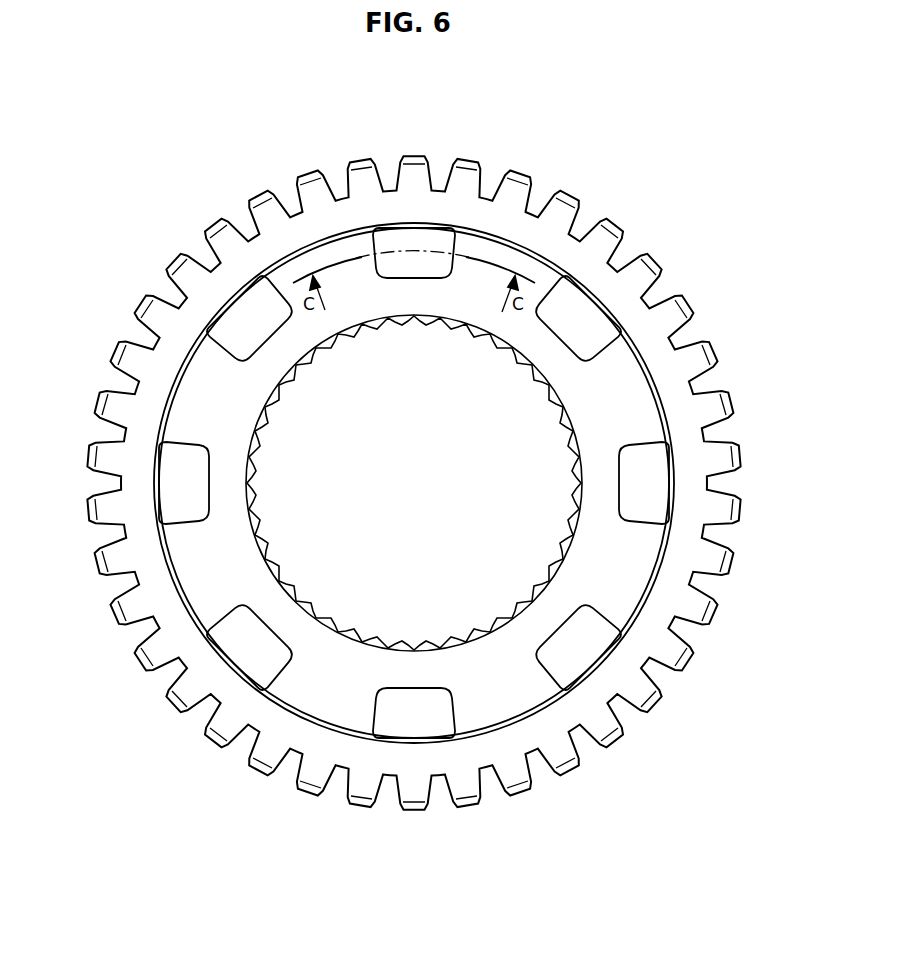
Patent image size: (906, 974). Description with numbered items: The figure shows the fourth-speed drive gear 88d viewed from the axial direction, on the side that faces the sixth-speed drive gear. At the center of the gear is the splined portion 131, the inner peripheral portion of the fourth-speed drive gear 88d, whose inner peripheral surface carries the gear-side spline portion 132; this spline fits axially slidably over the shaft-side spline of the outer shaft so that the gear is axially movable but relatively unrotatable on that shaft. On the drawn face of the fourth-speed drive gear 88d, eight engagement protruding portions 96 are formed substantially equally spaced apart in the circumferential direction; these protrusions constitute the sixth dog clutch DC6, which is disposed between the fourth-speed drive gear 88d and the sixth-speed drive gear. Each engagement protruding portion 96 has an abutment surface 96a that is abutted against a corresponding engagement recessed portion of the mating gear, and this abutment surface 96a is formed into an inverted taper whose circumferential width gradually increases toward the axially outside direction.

The fourth-speed drive gear 88d is at (522, 172).
The sixth dog clutch DC6 is at (442, 224).
The engagement protruding portion 96 is at (414, 240).
The abutment surface 96a is at (378, 243).
The splined portion 131 is at (248, 481).
The gear-side spline portion 132 is at (285, 584).